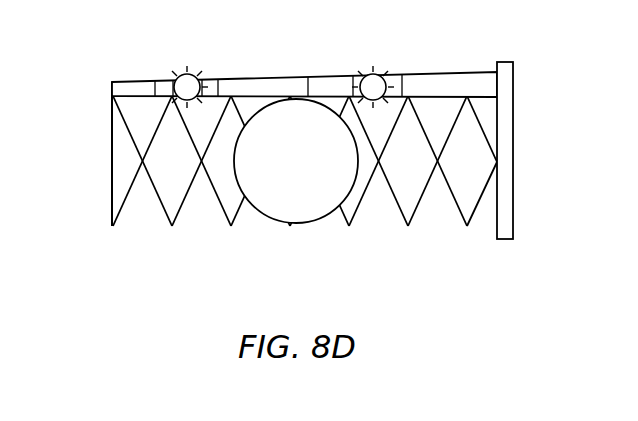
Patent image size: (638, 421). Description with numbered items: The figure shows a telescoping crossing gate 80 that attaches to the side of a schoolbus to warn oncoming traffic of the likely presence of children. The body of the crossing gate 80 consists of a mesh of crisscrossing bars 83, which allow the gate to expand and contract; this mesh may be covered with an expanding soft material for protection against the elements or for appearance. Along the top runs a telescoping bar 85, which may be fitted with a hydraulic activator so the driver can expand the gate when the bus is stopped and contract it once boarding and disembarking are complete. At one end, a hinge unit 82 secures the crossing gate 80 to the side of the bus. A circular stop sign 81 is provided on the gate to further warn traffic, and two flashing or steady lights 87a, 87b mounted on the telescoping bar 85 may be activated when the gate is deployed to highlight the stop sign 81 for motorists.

The crossing gate 80 is at (140, 64).
The stop sign 81 is at (285, 213).
The hinge unit 82 is at (513, 163).
The crisscrossing bars 83 is at (112, 162).
The telescoping bar 85 is at (448, 72).
The light 87a is at (193, 66).
The light 87b is at (367, 63).